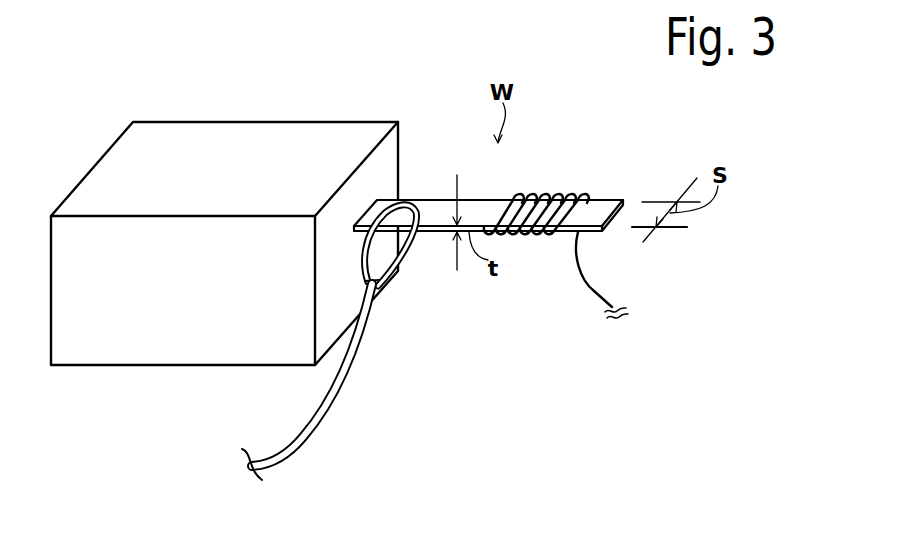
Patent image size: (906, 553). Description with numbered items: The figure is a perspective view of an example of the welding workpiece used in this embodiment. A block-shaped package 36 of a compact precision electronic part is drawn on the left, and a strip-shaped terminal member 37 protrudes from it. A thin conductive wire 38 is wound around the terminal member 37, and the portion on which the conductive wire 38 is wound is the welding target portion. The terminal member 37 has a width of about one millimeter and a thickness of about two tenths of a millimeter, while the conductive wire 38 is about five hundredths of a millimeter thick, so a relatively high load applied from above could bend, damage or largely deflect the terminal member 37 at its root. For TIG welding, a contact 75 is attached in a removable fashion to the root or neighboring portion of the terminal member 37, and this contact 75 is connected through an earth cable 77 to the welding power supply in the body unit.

The main body block 36 is at (223, 133).
The terminal member 37 is at (596, 211).
The conductive wire 38 is at (590, 288).
The contact 75 is at (417, 257).
The earth cable 77 is at (316, 443).